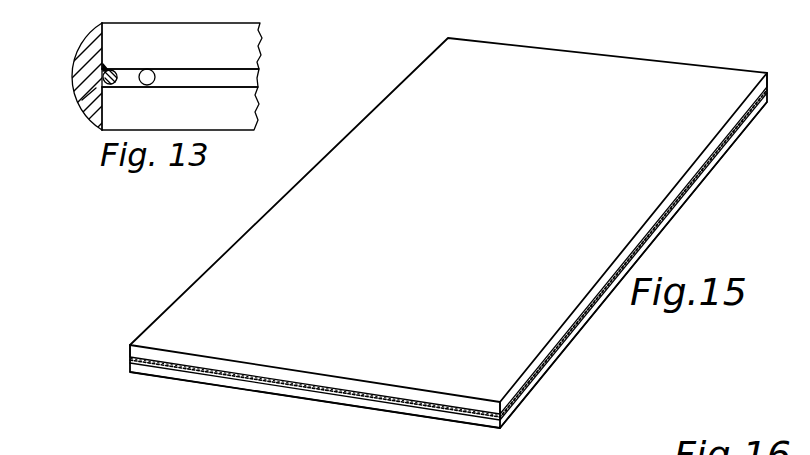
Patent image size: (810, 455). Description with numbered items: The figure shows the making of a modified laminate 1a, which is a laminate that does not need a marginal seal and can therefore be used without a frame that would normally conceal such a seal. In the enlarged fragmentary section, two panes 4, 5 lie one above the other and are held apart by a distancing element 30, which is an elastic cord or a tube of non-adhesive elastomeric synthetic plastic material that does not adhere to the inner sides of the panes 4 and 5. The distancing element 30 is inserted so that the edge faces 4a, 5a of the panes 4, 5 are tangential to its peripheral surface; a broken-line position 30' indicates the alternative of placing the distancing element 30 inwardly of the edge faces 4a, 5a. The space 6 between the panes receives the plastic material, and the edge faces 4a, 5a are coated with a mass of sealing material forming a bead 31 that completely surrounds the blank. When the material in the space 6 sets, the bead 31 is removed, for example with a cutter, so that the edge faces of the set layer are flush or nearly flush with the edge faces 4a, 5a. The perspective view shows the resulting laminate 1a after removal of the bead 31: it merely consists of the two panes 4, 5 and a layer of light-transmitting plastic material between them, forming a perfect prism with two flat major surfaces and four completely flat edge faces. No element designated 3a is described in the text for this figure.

In FIG. 15, the modified laminate 1a is at (250, 250).
In FIG. 13, the pane 4 is at (244, 117).
In FIG. 15, the pane 4 is at (767, 102).
In FIG. 13, the edge face of pane 4a is at (97, 127).
In FIG. 13, the pane 5 is at (252, 47).
In FIG. 15, the pane 5 is at (767, 73).
In FIG. 13, the edge face of pane 5a is at (97, 52).
In FIG. 13, the space 6 is at (246, 78).
In FIG. 13, the distancing element 30 is at (148, 42).
In FIG. 13, the broken-line position of distancing element 30' is at (204, 42).
In FIG. 13, the bead 31 is at (86, 98).
In FIG. 13, the partial element 3a is at (95, 6).